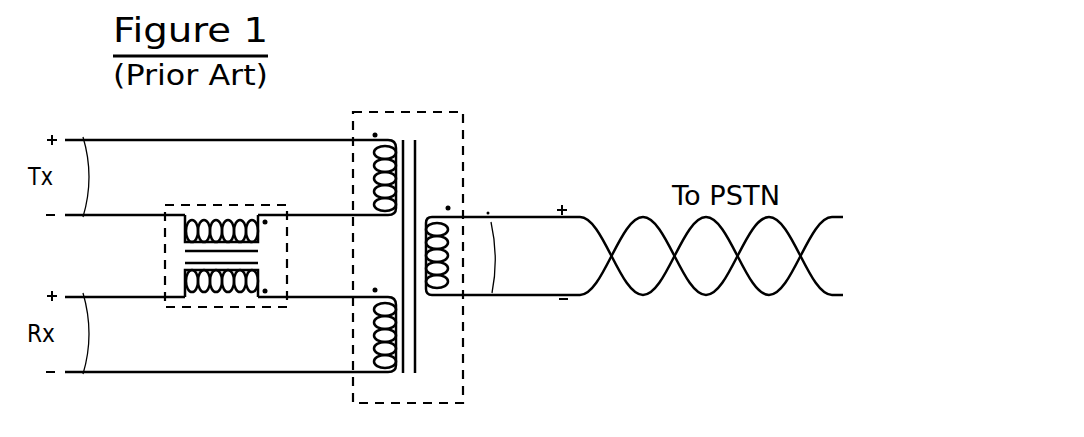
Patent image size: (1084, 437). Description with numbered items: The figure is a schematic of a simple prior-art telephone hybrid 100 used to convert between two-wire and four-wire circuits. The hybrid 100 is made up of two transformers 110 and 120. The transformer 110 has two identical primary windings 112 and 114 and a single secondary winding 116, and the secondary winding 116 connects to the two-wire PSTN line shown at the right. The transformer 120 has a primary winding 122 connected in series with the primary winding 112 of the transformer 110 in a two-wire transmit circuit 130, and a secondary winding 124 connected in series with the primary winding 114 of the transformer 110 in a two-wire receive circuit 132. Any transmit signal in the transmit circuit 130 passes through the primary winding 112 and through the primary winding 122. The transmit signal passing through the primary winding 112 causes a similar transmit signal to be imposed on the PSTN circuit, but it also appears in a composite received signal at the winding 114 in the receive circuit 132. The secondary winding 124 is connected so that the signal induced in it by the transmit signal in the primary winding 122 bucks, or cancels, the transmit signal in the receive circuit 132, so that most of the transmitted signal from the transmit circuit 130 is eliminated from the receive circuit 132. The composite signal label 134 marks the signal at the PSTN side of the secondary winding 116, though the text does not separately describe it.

The telephone hybrid 100 is at (560, 146).
The transformer 110 is at (463, 110).
The primary winding 112 is at (376, 178).
The primary winding 114 is at (376, 334).
The secondary winding 116 is at (447, 254).
The transformer 120 is at (165, 204).
The primary winding 122 is at (222, 226).
The secondary winding 124 is at (222, 290).
The transmit circuit 130 is at (83, 218).
The receive circuit 132 is at (83, 374).
The composite signal 134 is at (488, 296).